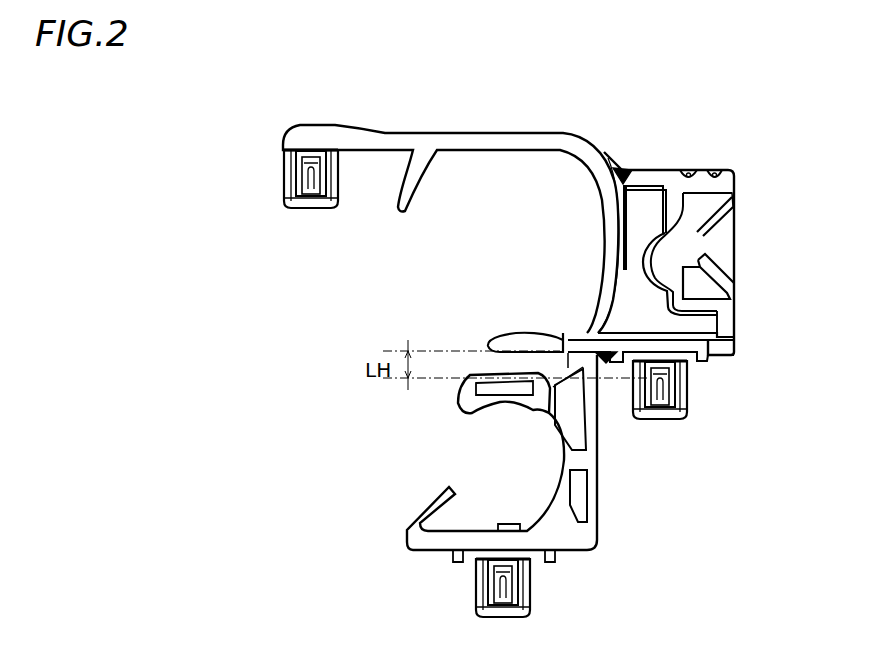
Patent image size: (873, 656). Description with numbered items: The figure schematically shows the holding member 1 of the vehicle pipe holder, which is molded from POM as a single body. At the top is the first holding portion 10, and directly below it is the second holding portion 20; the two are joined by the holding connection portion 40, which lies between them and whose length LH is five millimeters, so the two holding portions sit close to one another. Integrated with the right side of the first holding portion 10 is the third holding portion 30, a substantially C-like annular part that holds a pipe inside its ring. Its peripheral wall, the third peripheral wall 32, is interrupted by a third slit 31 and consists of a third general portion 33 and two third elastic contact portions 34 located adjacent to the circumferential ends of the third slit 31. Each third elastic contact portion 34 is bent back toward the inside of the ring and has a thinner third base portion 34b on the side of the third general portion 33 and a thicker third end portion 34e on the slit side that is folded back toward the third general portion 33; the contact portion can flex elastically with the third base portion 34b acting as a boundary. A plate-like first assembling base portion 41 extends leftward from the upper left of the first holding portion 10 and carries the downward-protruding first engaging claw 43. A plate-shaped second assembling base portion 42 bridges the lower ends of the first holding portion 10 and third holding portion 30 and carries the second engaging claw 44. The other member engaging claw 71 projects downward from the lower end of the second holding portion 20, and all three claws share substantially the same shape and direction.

The holding member 1 is at (604, 147).
The first holding portion 10 is at (502, 146).
The second holding portion 20 is at (570, 533).
The third holding portion 30 is at (693, 168).
The third slit 31 is at (716, 245).
The third peripheral wall 32 is at (718, 312).
The third general portion 33 is at (695, 315).
The third elastic contact portion 34 is at (698, 232).
The third base portion 34b is at (733, 203).
The third end portion 34e is at (693, 232).
The holding connection portion 40 is at (597, 363).
The first assembling base portion 41 is at (333, 135).
The second assembling base portion 42 is at (707, 361).
The first engaging claw 43 is at (282, 173).
The second engaging claw 44 is at (688, 418).
The other member engaging claw 71 is at (523, 600).